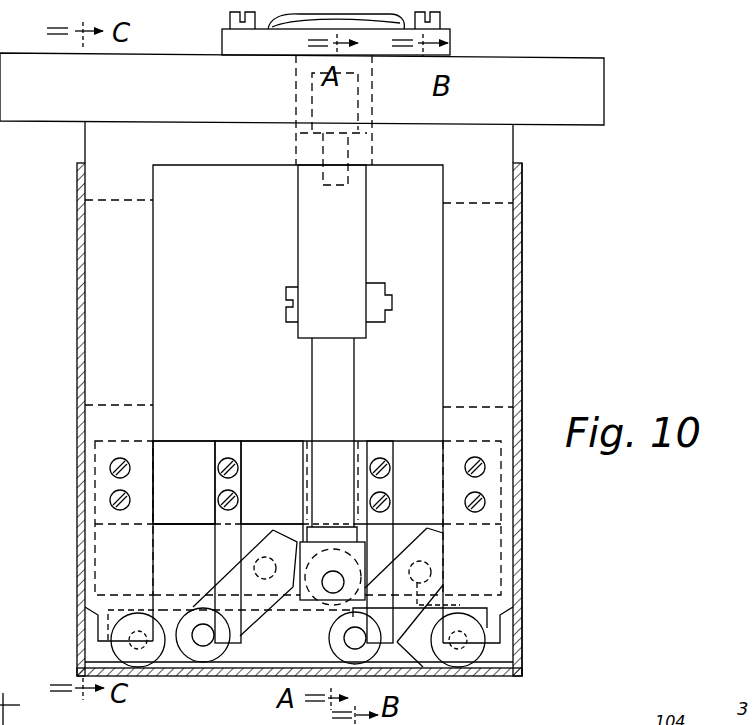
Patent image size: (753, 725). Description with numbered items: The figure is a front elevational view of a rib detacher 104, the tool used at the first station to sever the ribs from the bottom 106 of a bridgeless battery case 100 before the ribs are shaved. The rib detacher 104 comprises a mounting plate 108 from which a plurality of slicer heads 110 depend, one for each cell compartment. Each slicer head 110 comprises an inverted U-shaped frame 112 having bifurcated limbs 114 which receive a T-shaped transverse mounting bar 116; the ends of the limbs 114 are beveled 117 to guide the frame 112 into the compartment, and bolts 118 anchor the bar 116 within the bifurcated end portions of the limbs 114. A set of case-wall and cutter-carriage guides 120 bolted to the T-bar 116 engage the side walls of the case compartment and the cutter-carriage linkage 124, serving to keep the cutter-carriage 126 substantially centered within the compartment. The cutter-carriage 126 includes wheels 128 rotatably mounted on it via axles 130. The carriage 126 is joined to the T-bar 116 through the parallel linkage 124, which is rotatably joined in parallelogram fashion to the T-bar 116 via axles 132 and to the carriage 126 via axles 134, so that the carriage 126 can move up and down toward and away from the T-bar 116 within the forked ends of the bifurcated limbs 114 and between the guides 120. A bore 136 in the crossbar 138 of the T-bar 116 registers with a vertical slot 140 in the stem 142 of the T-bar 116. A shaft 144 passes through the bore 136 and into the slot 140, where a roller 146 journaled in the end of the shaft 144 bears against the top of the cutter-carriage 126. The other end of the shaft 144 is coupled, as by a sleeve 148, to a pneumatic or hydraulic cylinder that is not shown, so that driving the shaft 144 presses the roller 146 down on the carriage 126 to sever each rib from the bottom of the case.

The bridgeless case 100 is at (518, 265).
The rib detacher 104 is at (363, 413).
The bottom 106 is at (187, 677).
The mounting plate 108 is at (600, 70).
The slicer head 110 is at (519, 140).
The inverted U-shaped frame 112 is at (500, 372).
The bifurcated limbs 114 is at (458, 320).
The T-shaped transverse mounting bar 116 is at (183, 460).
The beveled ends 117 is at (80, 603).
The bolts 118 is at (540, 490).
The case-wall and cutter-carriage guides 120 is at (230, 445).
The cutter-carriage linkage 124 is at (312, 612).
The cutter-carriage 126 is at (410, 650).
The wheels 128 is at (120, 660).
The axles 130 is at (113, 647).
The axles 132 is at (268, 556).
The axles 134 is at (345, 640).
The bore 136 is at (318, 440).
The crossbar 138 is at (282, 452).
The vertical slot 140 is at (306, 530).
The stem 142 is at (185, 555).
The shaft 144 is at (340, 386).
The roller 146 is at (340, 553).
The sleeve 148 is at (310, 218).